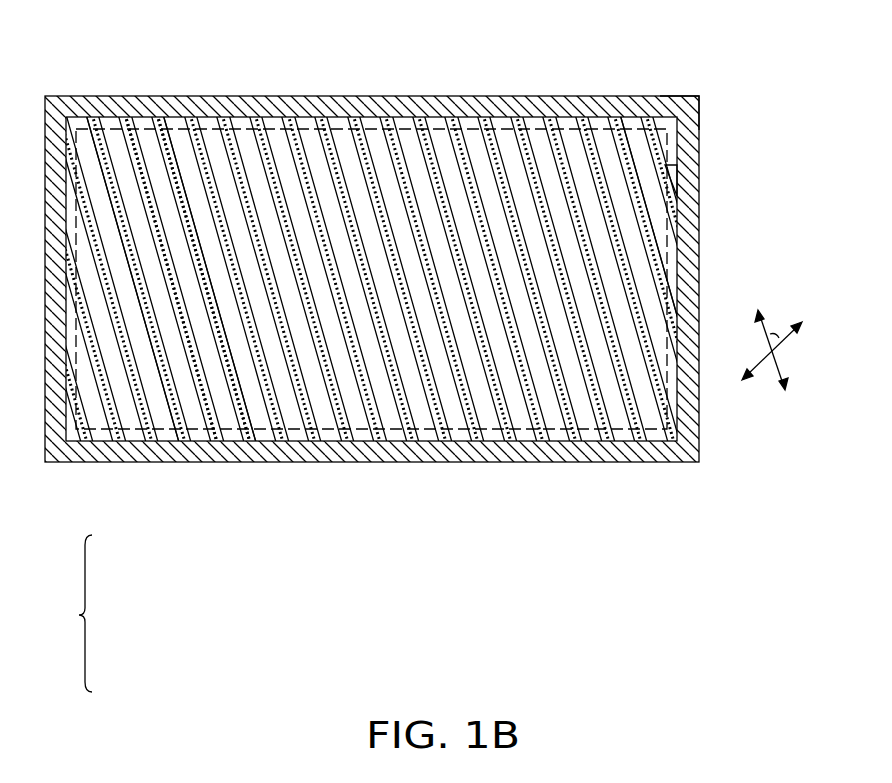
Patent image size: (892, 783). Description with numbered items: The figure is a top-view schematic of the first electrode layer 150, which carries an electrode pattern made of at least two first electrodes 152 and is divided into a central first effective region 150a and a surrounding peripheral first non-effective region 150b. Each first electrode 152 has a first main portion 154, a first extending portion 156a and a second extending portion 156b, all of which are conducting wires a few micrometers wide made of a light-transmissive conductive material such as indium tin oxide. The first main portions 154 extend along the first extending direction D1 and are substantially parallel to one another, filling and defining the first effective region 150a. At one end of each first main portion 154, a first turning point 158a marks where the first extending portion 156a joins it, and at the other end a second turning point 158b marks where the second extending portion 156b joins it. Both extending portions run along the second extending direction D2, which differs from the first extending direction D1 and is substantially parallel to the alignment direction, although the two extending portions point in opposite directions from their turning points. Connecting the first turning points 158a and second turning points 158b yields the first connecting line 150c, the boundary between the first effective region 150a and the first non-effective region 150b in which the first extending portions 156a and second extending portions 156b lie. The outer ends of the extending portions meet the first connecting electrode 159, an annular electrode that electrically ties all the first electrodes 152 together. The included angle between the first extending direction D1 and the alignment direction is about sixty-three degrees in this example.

The first electrode layer 150 is at (722, 519).
The first effective region 150a is at (651, 218).
The first non-effective region 150b is at (666, 151).
The first connecting line 150c is at (680, 104).
The first electrode 152 is at (94, 609).
The first main portion 154 is at (212, 128).
The first extending portion 156a is at (108, 120).
The second extending portion 156b is at (257, 440).
The first turning point 158a is at (150, 128).
The second turning point 158b is at (257, 432).
The first connecting electrode 159 is at (323, 112).
The first extending direction D1 is at (785, 365).
The second extending direction D2 is at (765, 372).